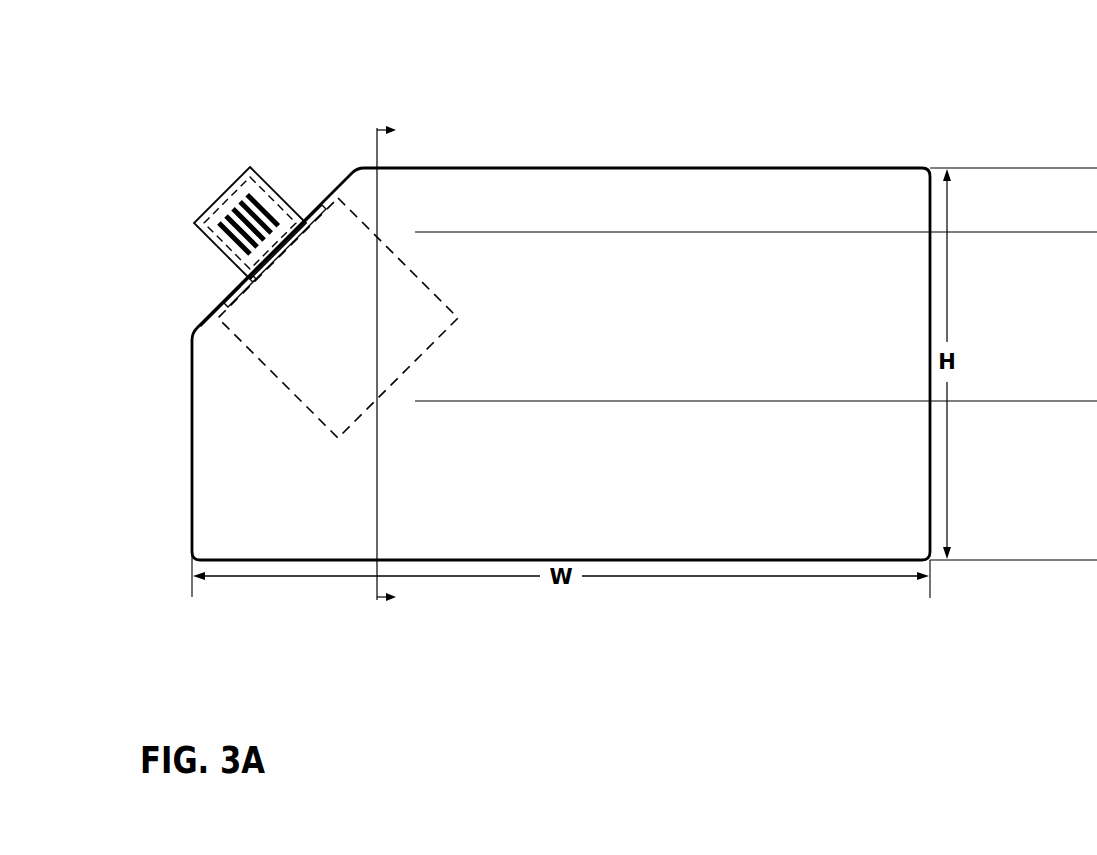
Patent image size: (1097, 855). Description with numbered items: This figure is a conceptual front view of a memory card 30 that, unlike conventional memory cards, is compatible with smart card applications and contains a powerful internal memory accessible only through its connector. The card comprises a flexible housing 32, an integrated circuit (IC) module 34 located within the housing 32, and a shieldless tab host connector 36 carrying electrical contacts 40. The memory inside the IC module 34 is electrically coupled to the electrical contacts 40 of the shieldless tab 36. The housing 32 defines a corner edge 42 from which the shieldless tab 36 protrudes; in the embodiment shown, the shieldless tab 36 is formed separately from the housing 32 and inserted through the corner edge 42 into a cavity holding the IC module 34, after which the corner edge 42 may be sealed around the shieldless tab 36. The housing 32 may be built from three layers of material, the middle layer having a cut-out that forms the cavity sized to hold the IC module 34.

The memory card 30 is at (612, 310).
The flexible housing 32 is at (672, 188).
The integrated circuit (IC) module 34 is at (415, 315).
The shieldless tab host connector 36 is at (265, 158).
The electrical contacts 40 is at (270, 260).
The corner edge 42 is at (226, 291).